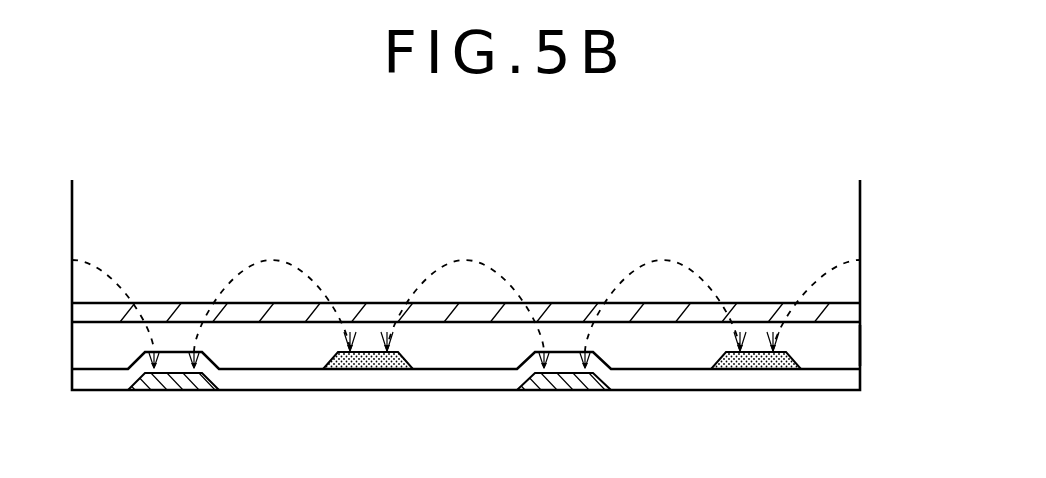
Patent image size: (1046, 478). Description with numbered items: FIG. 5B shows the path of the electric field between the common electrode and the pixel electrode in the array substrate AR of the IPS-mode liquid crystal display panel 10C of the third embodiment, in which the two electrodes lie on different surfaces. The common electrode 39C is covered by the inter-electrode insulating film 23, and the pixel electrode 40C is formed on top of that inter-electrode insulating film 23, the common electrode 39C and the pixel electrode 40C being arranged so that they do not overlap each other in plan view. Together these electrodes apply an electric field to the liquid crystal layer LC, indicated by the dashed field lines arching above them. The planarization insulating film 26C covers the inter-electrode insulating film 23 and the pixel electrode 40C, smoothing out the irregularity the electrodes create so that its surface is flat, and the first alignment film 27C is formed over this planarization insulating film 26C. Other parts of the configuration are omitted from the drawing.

The liquid crystal display panel 10C is at (171, 178).
The liquid crystal layer LC is at (813, 222).
The array substrate AR is at (866, 354).
The inter-electrode insulating film 23 is at (270, 376).
The planarization insulating film 26C is at (463, 347).
The first alignment film 27C is at (665, 313).
The common electrode 39C is at (172, 380).
The pixel electrode 40C is at (370, 355).